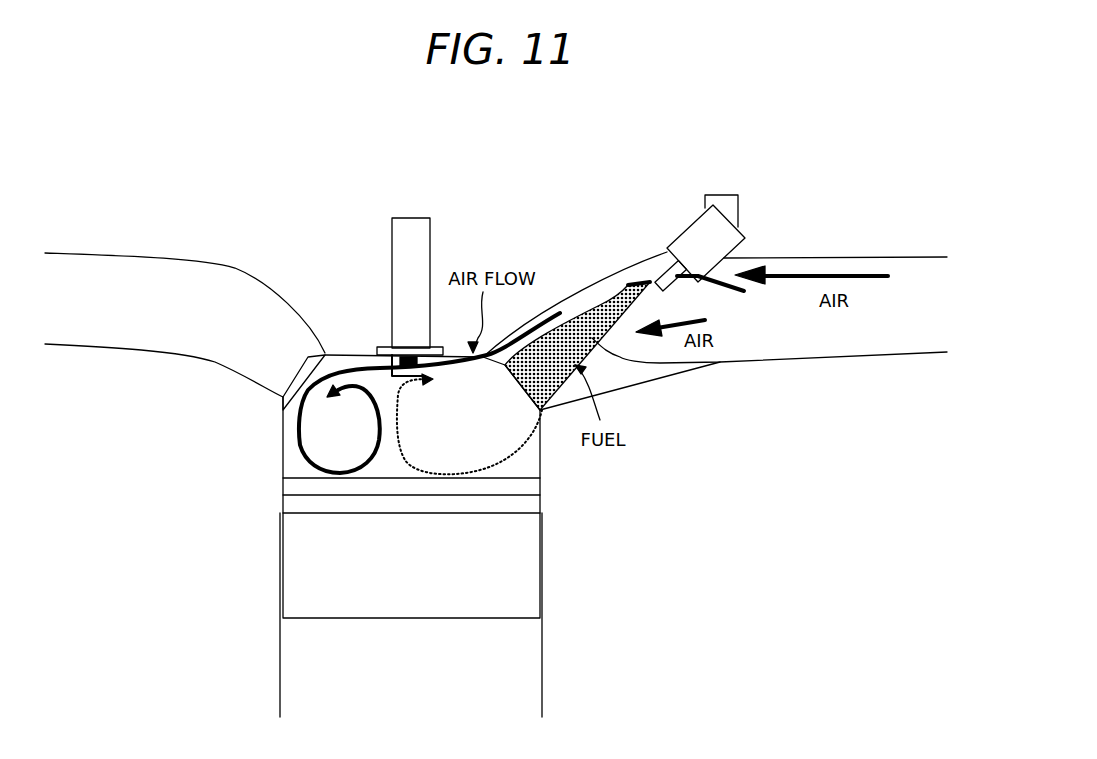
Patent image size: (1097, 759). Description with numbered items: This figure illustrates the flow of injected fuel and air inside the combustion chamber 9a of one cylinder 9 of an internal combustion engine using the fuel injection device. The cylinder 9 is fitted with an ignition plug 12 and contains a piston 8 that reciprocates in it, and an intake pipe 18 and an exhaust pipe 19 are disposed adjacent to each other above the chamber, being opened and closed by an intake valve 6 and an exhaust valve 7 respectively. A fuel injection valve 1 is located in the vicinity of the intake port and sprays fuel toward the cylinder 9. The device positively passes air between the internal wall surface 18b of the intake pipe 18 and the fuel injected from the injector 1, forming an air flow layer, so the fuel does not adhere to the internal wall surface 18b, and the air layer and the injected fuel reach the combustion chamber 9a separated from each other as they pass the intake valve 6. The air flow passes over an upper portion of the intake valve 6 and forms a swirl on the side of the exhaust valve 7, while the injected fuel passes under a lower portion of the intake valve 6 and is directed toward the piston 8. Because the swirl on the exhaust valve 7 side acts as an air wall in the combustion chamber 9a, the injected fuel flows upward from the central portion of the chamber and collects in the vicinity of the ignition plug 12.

The fuel injection valve 1 is at (695, 233).
The intake valve 6 is at (520, 427).
The exhaust valve 7 is at (302, 428).
The piston 8 is at (427, 602).
The cylinder 9 is at (542, 567).
The combustion chamber 9a is at (398, 402).
The ignition plug 12 is at (408, 233).
The intake pipe 18 is at (815, 257).
The internal wall surface 18b is at (568, 293).
The exhaust pipe 19 is at (230, 265).